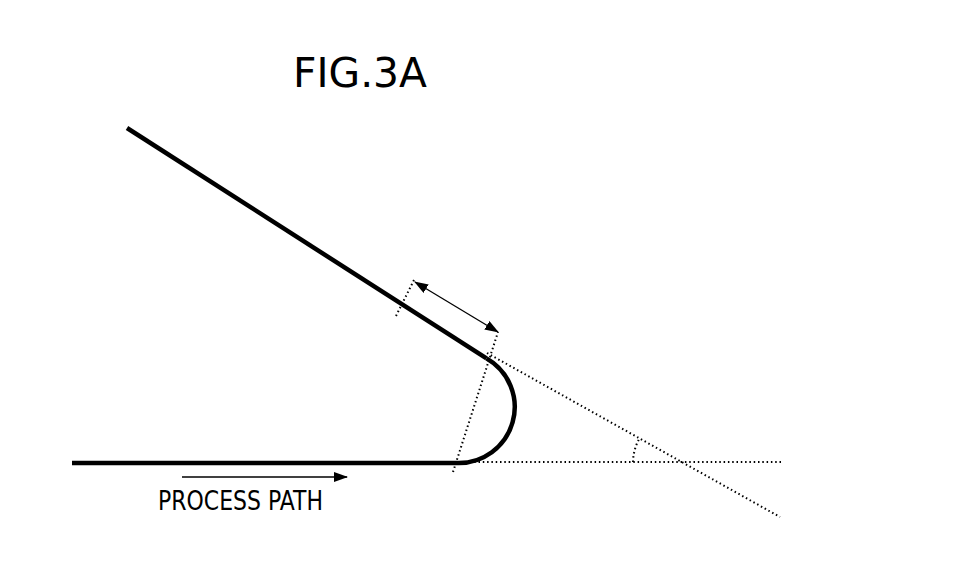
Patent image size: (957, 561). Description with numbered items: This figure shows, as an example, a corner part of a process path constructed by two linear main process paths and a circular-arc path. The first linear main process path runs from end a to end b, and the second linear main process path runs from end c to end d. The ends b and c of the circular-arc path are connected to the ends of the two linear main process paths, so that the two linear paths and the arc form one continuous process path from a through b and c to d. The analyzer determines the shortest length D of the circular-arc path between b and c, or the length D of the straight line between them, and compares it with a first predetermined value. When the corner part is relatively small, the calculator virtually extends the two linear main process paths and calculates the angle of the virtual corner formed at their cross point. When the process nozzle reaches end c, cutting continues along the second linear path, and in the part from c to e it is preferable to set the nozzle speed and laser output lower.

The end of linear main process path ab a is at (257, 485).
The end of circular-arc path bc b is at (612, 430).
The end of circular-arc path bc c is at (633, 412).
The end of linear main process path cd d is at (297, 230).
The end of part ce e is at (447, 292).
The length of circular-arc path bc D is at (470, 402).